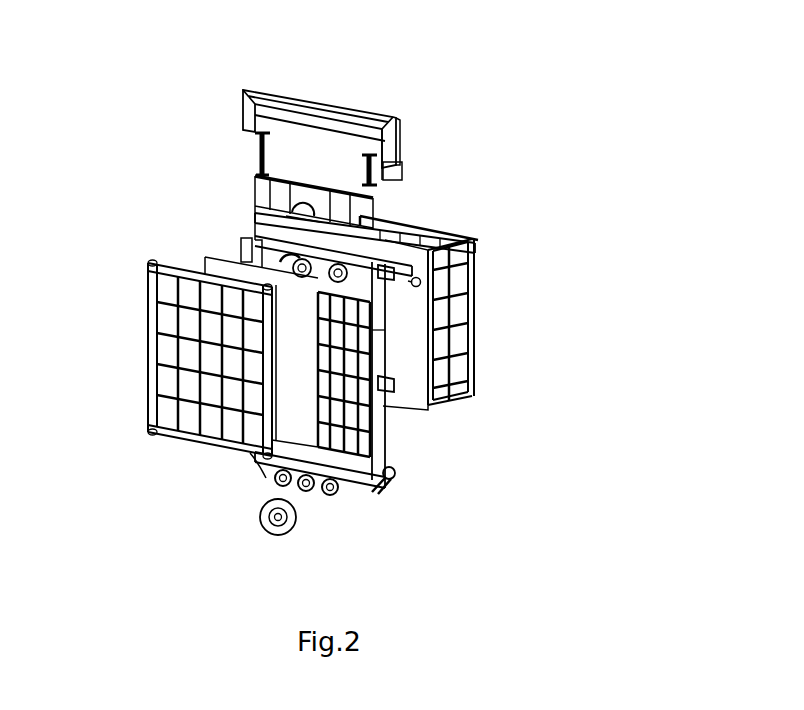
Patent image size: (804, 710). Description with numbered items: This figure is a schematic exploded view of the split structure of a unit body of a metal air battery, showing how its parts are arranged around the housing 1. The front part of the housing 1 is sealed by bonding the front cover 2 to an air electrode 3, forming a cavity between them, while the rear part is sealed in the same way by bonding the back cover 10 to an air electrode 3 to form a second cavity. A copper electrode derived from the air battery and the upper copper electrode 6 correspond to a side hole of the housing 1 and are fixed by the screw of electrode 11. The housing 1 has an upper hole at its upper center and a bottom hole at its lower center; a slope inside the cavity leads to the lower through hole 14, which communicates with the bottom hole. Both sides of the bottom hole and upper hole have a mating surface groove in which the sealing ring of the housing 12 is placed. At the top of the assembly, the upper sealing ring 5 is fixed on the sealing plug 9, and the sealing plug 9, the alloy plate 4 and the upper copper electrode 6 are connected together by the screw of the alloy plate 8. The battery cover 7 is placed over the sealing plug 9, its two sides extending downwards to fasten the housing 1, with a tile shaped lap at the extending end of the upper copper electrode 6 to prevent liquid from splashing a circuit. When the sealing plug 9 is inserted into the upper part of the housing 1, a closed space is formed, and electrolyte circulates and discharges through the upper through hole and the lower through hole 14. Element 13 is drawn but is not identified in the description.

The housing 1 is at (252, 456).
The front cover 2 is at (148, 267).
The air electrode 3 is at (202, 262).
The alloy plate 4 is at (252, 243).
The upper sealing ring 5 is at (256, 195).
The upper copper electrode 6 is at (330, 104).
The battery cover 7 is at (398, 137).
The screw of an alloy plate 8 is at (402, 167).
The sealing plug 9 is at (380, 216).
The back cover 10 is at (476, 240).
The screw of electrode 11 is at (472, 299).
The sealing ring of a housing 12 is at (395, 477).
The bolt 13 is at (262, 158).
The lower through hole 14 is at (262, 531).